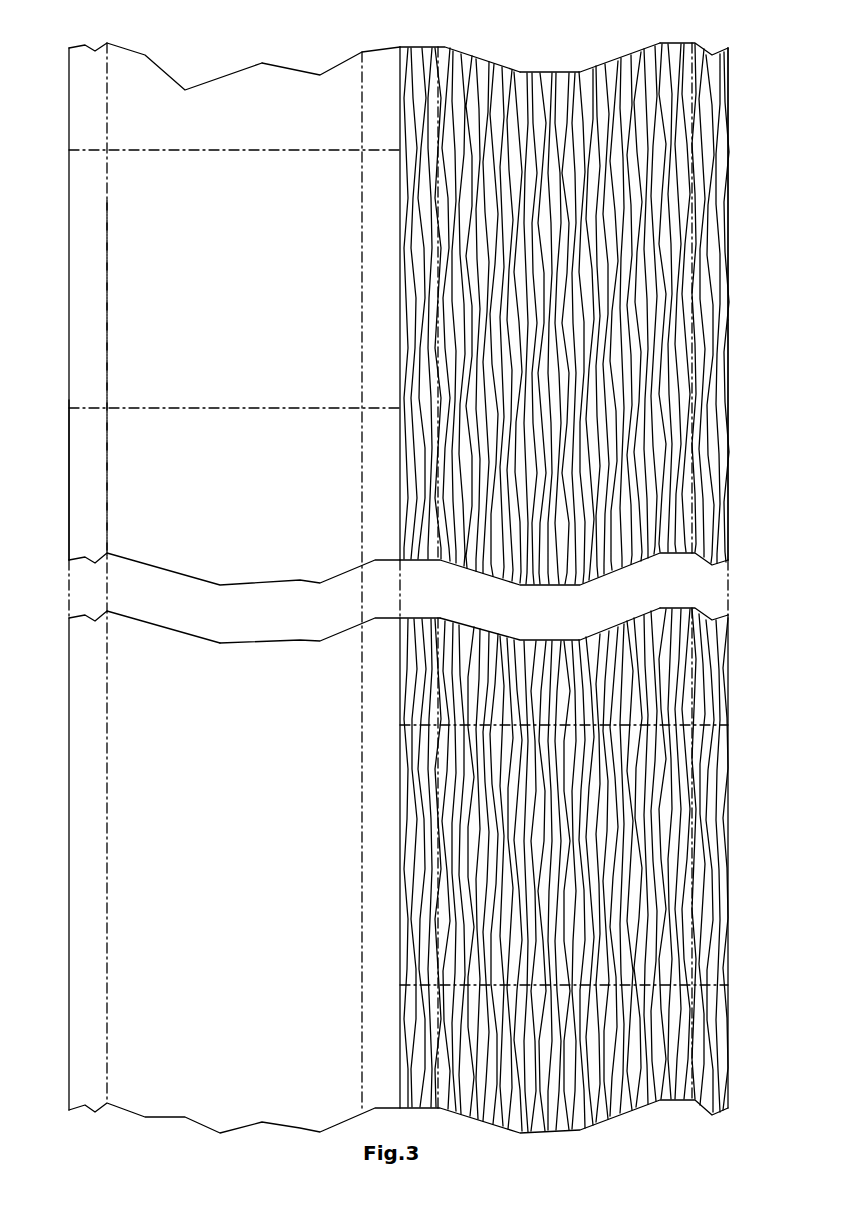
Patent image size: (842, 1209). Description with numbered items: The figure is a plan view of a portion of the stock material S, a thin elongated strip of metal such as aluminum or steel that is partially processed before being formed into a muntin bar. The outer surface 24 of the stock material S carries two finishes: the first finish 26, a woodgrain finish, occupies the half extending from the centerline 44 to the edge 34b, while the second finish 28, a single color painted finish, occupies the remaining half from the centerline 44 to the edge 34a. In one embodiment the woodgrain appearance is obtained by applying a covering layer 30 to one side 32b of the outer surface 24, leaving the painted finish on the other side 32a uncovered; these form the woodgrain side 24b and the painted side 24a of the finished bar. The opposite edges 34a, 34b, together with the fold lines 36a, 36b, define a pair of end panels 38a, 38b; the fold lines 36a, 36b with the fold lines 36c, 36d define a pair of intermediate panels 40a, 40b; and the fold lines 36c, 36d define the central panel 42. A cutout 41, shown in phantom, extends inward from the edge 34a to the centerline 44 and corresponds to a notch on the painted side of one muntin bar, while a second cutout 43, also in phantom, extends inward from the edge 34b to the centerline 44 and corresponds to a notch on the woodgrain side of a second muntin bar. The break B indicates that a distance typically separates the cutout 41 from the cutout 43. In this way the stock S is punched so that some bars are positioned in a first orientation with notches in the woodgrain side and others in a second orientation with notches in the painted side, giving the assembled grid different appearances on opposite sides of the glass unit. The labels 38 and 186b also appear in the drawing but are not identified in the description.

The outer surface 24 is at (213, 540).
The painted side 24a is at (148, 93).
The woodgrain side 24b is at (620, 93).
The first finish 26 is at (668, 337).
The second finish 28 is at (125, 122).
The covering layer 30 is at (680, 500).
The uncovered side 32a is at (282, 540).
The covered side 32b is at (665, 535).
The first edge 34a is at (69, 357).
The second edge 34b is at (728, 312).
The first fold line 36a is at (107, 300).
The second fold line 36b is at (692, 289).
The third fold line 36c is at (362, 338).
The fourth fold line 36d is at (438, 358).
The textured region edge 38 is at (423, 90).
The first end panel 38a is at (88, 500).
The second end panel 38b is at (702, 225).
The first intermediate panel 40a is at (167, 117).
The second intermediate panel 40b is at (520, 130).
The cutout 41 is at (145, 200).
The central panel 42 is at (415, 1085).
The second cutout 43 is at (668, 862).
The centerline 44 is at (413, 87).
The lower edge segment 186b is at (548, 560).
The stock material S is at (731, 115).
The break B is at (112, 588).